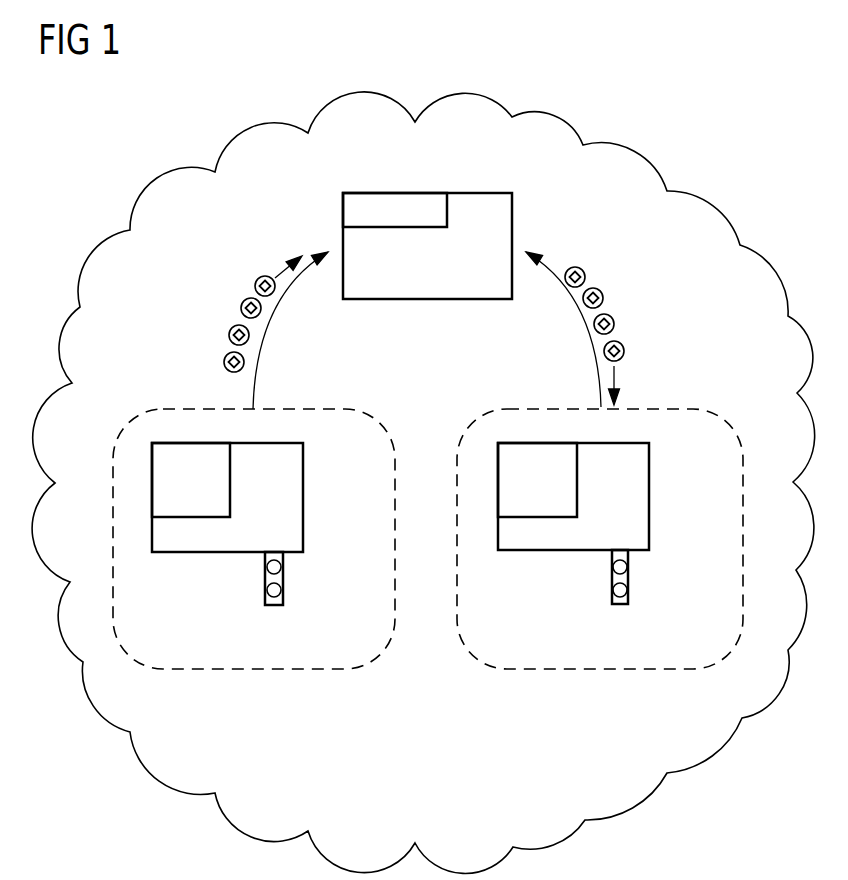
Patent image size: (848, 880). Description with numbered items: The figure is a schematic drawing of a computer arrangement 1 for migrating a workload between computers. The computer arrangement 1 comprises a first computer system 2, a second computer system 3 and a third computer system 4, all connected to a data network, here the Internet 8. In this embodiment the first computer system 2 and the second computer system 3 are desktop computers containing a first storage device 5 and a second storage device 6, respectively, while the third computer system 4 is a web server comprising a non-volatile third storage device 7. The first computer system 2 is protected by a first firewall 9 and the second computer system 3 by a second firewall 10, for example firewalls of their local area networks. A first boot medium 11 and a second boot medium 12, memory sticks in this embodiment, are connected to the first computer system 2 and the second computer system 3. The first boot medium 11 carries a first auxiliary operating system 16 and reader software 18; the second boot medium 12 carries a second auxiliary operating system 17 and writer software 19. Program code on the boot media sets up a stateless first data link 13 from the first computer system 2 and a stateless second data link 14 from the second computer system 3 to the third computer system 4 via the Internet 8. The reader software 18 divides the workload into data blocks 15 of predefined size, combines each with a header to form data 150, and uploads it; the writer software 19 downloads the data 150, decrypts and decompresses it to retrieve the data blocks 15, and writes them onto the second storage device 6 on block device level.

The computer arrangement 1 is at (700, 115).
The first computer system 2 is at (256, 543).
The second computer system 3 is at (601, 543).
The third computer system 4 is at (430, 310).
The first storage device 5 is at (231, 480).
The second storage device 6 is at (578, 480).
The third storage device 7 is at (397, 193).
The Internet 8 is at (463, 95).
The first firewall 9 is at (317, 408).
The second firewall 10 is at (521, 408).
The first boot medium 11 is at (294, 597).
The second boot medium 12 is at (640, 596).
The first data link 13 is at (252, 400).
The second data link 14 is at (600, 386).
The data blocks 15 is at (438, 311).
The data 150 is at (264, 276).
The first auxiliary operating system 16 is at (288, 590).
The second auxiliary operating system 17 is at (632, 590).
The reader software 18 is at (284, 567).
The writer software 19 is at (630, 567).